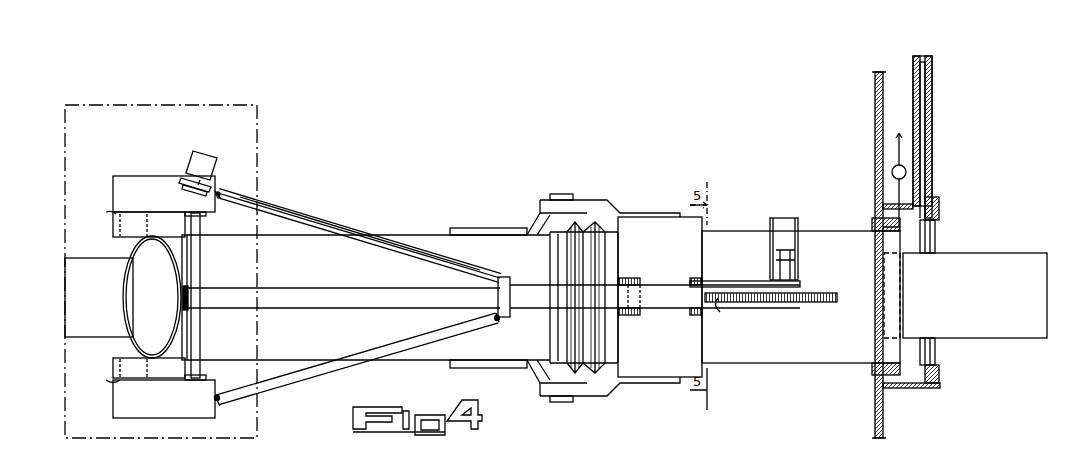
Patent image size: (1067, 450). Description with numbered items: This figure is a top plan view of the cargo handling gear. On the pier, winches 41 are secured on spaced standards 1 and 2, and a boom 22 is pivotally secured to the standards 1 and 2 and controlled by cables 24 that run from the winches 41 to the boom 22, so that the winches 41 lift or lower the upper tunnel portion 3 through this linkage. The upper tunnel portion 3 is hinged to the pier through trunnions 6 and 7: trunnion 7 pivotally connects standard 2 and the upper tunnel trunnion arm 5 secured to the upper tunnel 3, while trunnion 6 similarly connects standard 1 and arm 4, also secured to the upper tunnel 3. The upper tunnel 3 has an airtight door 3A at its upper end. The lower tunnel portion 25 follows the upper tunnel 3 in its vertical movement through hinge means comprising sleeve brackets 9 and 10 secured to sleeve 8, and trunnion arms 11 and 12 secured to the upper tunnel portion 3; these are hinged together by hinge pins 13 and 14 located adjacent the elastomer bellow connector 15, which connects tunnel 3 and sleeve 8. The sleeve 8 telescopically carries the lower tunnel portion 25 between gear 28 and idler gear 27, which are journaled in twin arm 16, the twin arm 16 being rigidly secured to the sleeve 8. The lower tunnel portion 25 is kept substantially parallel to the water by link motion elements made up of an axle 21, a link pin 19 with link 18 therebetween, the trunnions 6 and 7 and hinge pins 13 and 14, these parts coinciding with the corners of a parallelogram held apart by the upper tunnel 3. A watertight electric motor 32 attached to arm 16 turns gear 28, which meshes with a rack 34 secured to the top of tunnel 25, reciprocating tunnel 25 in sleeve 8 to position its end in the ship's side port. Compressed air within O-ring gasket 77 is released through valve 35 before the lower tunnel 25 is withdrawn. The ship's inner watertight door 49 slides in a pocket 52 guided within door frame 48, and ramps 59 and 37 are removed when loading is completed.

The standard 1 is at (158, 202).
The standard 2 is at (158, 407).
The upper tunnel portion 3 is at (288, 273).
The airtight door 3A is at (180, 276).
The arm 4 is at (170, 235).
The upper tunnel trunnion arm 5 is at (170, 376).
The trunnion 6 is at (105, 210).
The trunnion 7 is at (106, 378).
The sleeve 8 is at (662, 253).
The sleeve bracket 9 is at (610, 205).
The sleeve bracket 10 is at (625, 395).
The trunnion arm 11 is at (482, 226).
The trunnion arm 12 is at (505, 372).
The hinge pin 13 is at (574, 194).
The hinge pin 14 is at (574, 402).
The elastomer bellow connector 15 is at (551, 226).
The twin arm 16 is at (662, 282).
The link 18 is at (358, 305).
The link pin 19 is at (643, 306).
The axle 21 is at (204, 222).
The boom 22 is at (345, 221).
The cable 24 is at (298, 214).
The lower tunnel portion 25 is at (796, 349).
The idler gear 27 is at (718, 312).
The gear 28 is at (800, 302).
The watertight electric motor 32 is at (794, 219).
The rack 34 is at (824, 293).
The valve 35 is at (891, 175).
The ramp 37 is at (106, 303).
The winch 41 is at (178, 175).
The door frame 48 is at (940, 213).
The watertight door 49 is at (924, 167).
The pocket 52 is at (932, 122).
The ramp 59 is at (976, 300).
The O-ring gasket 77 is at (873, 220).